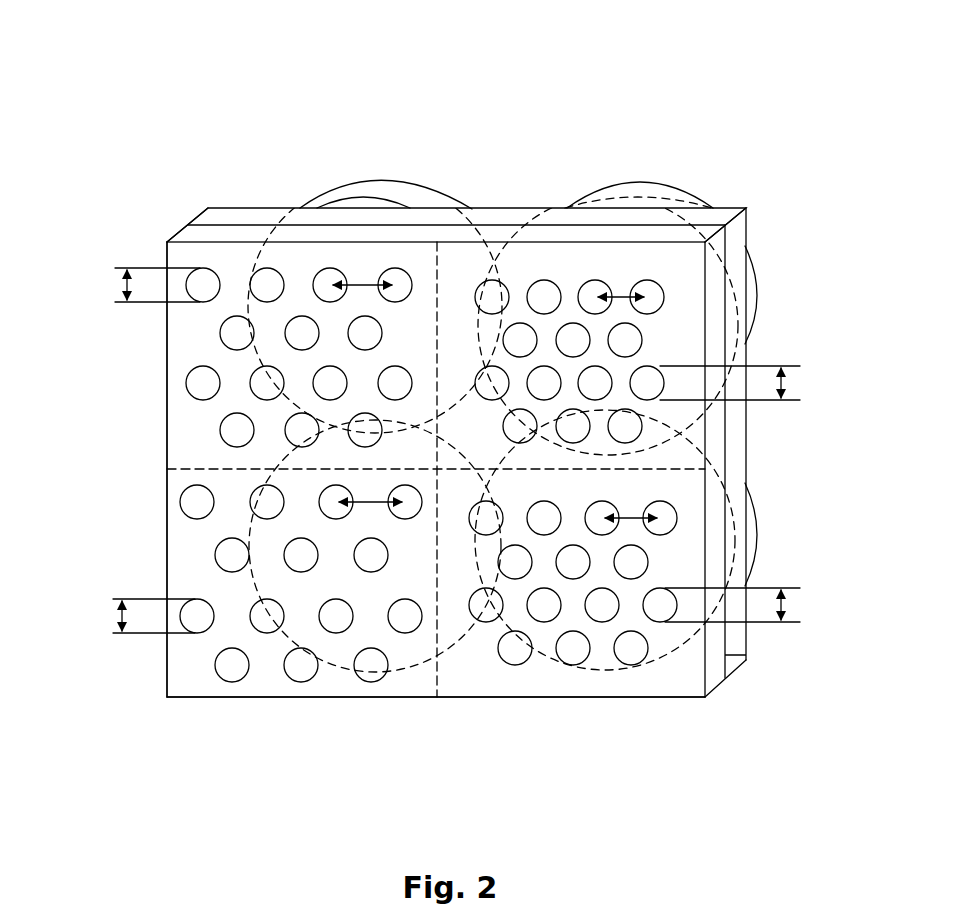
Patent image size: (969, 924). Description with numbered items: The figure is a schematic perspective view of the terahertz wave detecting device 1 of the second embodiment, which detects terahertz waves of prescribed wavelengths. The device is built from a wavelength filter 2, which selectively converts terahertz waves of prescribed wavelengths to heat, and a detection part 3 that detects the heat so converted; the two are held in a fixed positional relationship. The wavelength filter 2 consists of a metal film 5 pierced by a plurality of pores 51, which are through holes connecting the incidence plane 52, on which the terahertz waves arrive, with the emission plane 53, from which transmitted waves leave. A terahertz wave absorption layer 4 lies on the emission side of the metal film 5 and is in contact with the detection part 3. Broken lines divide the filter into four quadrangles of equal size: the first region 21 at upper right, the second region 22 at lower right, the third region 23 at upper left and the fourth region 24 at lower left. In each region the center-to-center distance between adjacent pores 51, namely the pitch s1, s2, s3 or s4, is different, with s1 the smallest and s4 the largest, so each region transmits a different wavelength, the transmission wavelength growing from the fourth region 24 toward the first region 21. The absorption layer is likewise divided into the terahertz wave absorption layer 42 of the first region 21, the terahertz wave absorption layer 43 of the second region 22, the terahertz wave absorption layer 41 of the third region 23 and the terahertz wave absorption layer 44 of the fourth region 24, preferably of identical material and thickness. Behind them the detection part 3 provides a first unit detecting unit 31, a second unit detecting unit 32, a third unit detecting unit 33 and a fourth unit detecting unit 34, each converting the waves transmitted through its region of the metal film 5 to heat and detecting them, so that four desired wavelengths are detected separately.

The terahertz wave detecting device 1 is at (640, 58).
The wavelength filter 2 is at (160, 387).
The detection part 3 is at (818, 301).
The terahertz wave absorption layer 4 is at (228, 212).
The metal film 5 is at (187, 257).
The first region 21 is at (690, 418).
The second region 22 is at (655, 686).
The third region 23 is at (187, 331).
The fourth region 24 is at (187, 543).
The first unit detecting unit 31 is at (757, 296).
The second unit detecting unit 32 is at (757, 537).
The third unit detecting unit 33 is at (386, 186).
The fourth unit detecting unit 34 is at (397, 653).
The terahertz wave absorption layer of the third region 41 is at (212, 208).
The terahertz wave absorption layer of the first region 42 is at (735, 210).
The terahertz wave absorption layer of the second region 43 is at (735, 638).
The terahertz wave absorption layer of the fourth region 44 is at (167, 490).
The pores 51 is at (330, 268).
The incidence plane 52 is at (693, 688).
The emission plane 53 is at (745, 662).